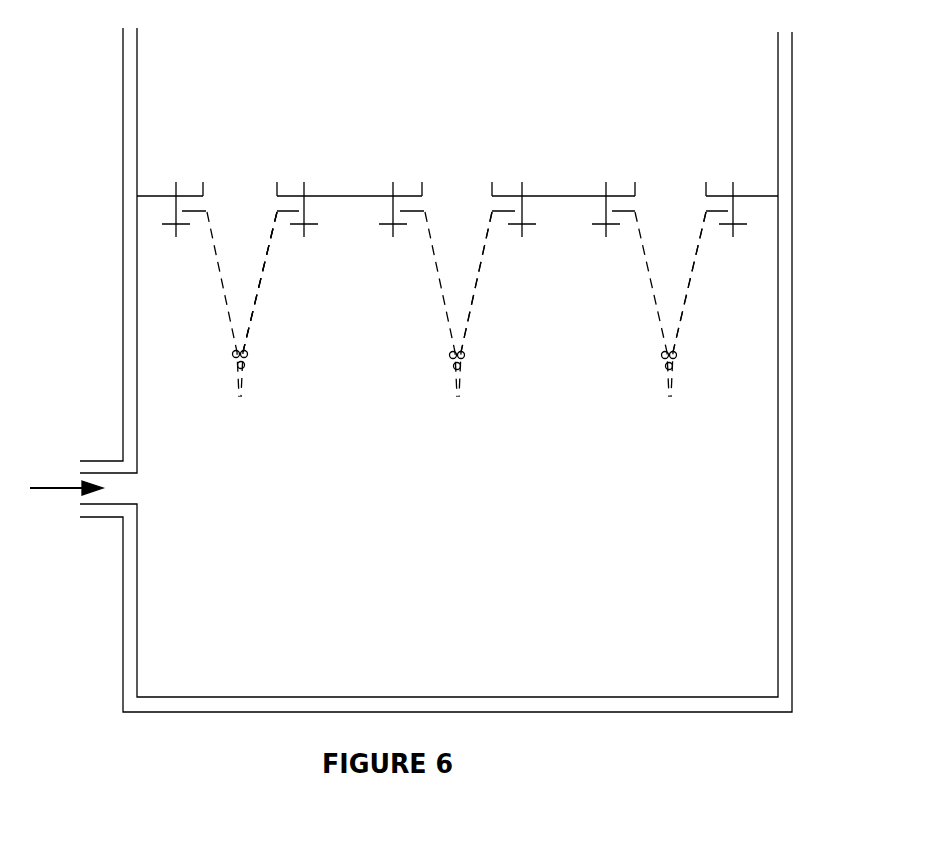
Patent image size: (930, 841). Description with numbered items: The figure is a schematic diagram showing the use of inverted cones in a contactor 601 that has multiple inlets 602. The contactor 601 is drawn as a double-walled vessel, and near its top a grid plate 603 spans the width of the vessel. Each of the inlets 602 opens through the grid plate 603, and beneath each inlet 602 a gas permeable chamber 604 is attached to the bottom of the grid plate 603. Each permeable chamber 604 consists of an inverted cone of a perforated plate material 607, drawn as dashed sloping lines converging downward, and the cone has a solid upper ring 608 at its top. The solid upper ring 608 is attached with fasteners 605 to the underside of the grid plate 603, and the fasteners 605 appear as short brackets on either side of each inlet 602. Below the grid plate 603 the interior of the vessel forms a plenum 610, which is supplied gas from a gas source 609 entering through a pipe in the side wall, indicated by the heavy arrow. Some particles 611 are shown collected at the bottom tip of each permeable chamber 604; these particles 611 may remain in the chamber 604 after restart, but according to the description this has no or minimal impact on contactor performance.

The contactor 601 is at (139, 108).
The inlet 602 is at (238, 208).
The grid plate 603 is at (365, 194).
The permeable chamber 604 is at (283, 282).
The fastener 605 is at (179, 183).
The perforated plate material 607 is at (259, 306).
The solid upper ring 608 is at (193, 214).
The gas source 609 is at (58, 486).
The plenum 610 is at (429, 572).
The particles 611 is at (236, 366).